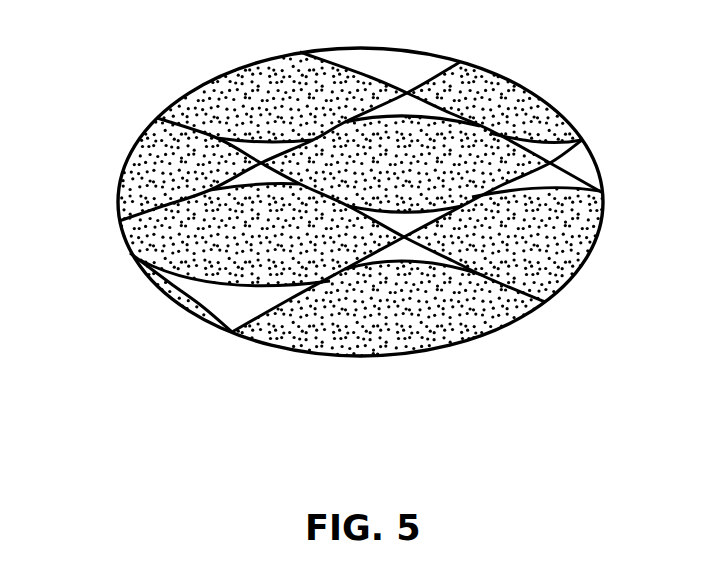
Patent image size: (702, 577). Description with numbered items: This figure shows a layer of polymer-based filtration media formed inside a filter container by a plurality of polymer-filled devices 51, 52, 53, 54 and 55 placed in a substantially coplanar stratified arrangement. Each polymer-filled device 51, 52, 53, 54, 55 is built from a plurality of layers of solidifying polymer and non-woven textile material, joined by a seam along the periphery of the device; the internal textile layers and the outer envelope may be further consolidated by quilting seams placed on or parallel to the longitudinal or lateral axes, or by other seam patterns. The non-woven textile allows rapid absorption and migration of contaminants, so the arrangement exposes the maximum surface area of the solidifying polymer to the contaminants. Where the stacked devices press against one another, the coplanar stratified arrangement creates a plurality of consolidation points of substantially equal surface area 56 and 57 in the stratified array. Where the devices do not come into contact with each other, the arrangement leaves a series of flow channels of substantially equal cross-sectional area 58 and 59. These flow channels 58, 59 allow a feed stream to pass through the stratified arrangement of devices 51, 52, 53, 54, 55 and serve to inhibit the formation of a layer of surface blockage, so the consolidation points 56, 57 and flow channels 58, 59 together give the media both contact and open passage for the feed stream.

The polymer-filled device 51 is at (480, 83).
The polymer-filled device 52 is at (197, 110).
The polymer-filled device 53 is at (143, 187).
The polymer-filled device 54 is at (217, 300).
The polymer-filled device 55 is at (441, 323).
The consolidation point of substantially equal surface area 56 is at (487, 279).
The consolidation point of substantially equal surface area 57 is at (335, 126).
The flow channel of substantially equal cross-sectional area 58 is at (400, 250).
The flow channel of substantially equal cross-sectional area 59 is at (264, 150).